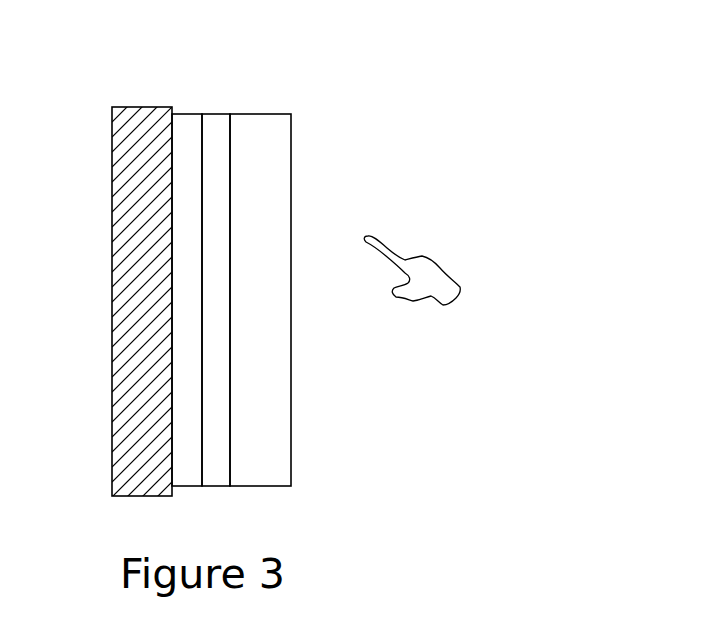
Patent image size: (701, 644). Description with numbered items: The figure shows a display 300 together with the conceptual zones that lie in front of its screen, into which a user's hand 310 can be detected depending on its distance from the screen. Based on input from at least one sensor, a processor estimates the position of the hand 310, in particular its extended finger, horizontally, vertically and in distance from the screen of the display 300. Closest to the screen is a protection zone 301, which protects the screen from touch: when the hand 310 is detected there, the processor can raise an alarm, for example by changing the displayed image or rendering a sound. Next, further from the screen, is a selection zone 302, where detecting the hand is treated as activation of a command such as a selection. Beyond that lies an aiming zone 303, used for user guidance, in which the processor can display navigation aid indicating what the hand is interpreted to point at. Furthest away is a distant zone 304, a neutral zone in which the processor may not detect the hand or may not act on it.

The display 300 is at (140, 106).
The protection zone 301 is at (184, 113).
The selection zone 302 is at (213, 113).
The aiming zone 303 is at (259, 113).
The distant zone 304 is at (375, 84).
The user's hand 310 is at (411, 256).